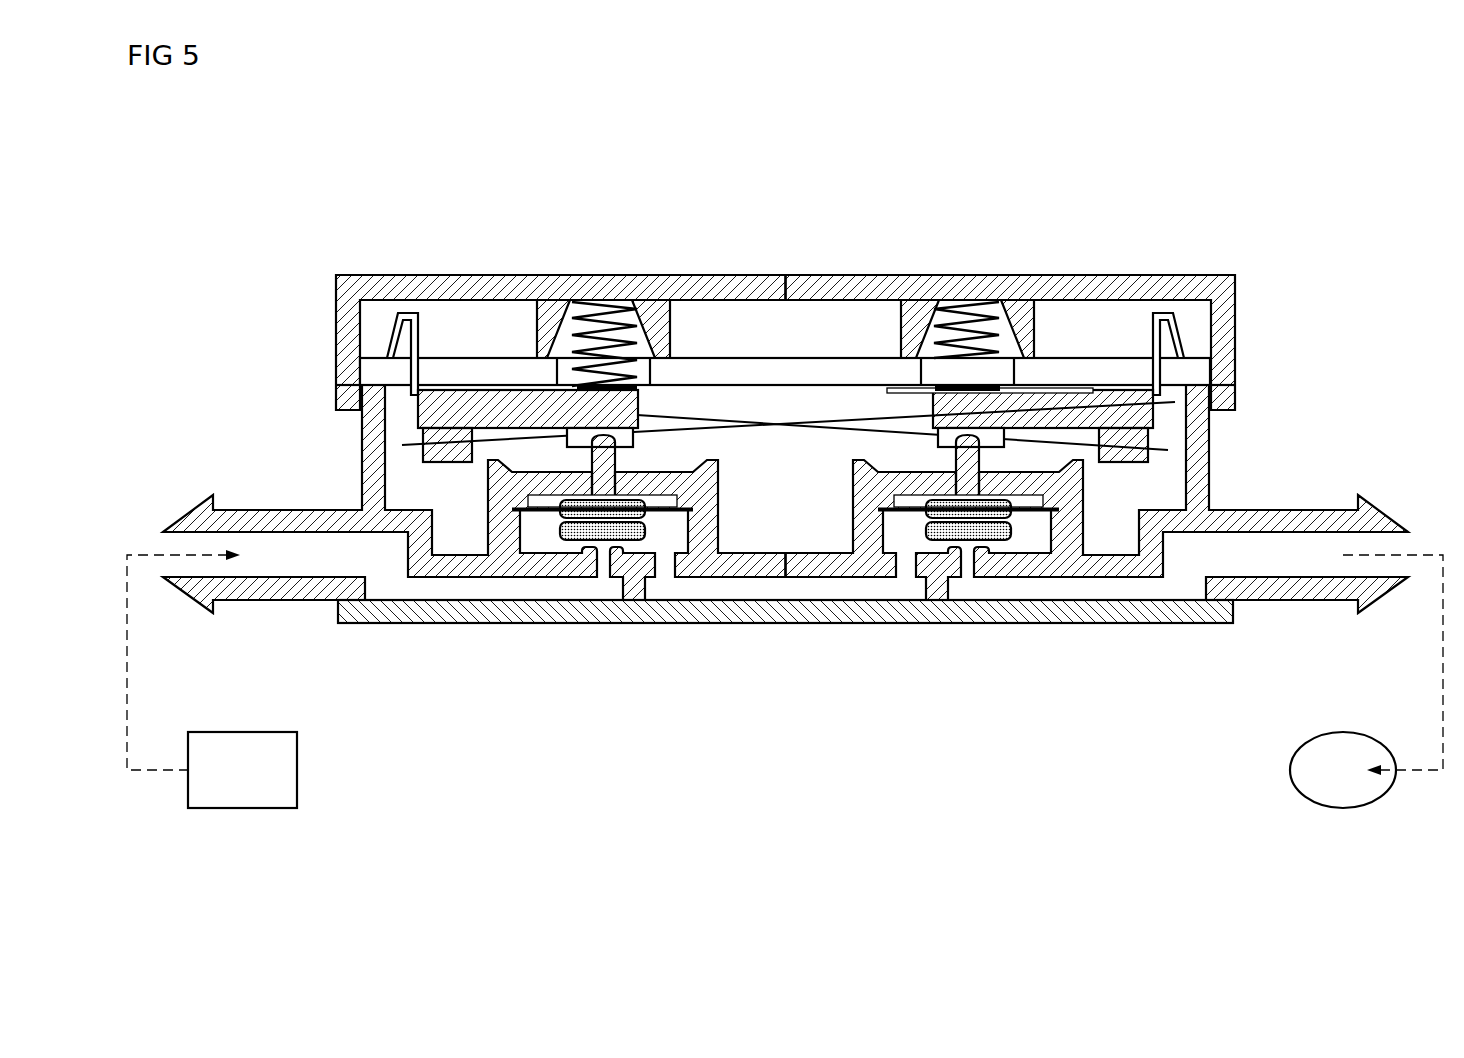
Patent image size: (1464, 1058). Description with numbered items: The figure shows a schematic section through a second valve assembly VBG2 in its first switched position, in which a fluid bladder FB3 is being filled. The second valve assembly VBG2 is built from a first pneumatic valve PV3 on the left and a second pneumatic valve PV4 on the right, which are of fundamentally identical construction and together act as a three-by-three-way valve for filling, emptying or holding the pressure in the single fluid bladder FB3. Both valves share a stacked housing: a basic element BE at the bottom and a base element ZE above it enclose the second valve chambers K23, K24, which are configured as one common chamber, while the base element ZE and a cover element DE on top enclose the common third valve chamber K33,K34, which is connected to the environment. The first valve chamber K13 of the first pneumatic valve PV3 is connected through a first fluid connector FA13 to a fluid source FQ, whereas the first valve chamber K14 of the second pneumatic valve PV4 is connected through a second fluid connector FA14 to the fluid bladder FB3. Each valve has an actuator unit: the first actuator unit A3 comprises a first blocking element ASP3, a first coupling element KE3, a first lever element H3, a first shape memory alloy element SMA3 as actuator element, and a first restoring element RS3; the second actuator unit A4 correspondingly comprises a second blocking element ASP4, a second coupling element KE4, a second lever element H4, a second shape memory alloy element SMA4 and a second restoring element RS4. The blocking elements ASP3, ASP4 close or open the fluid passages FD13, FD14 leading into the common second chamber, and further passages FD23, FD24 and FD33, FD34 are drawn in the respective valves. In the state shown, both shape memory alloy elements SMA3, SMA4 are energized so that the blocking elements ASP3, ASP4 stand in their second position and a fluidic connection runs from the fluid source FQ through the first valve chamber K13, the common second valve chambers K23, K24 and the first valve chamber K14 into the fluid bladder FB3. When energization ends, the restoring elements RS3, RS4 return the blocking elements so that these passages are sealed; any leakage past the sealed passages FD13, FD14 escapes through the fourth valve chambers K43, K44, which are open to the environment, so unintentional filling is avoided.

The cover element DE is at (1188, 298).
The base element ZE is at (797, 578).
The basic element BE is at (825, 613).
The first fluid connector FA13 is at (265, 588).
The second fluid connector FA14 is at (1298, 588).
The first lever element H3 is at (450, 410).
The second lever element H4 is at (1092, 417).
The first shape memory alloy element SMA3 is at (500, 460).
The second shape memory alloy element SMA4 is at (1087, 417).
The first restoring element RS3 is at (623, 393).
The second restoring element RS4 is at (1067, 445).
The spring seat element FD33 is at (622, 405).
The spring seat element FD34 is at (940, 445).
The third valve chambers K33,K34 is at (800, 440).
The first pneumatic valve PV3 is at (470, 170).
The second pneumatic valve PV4 is at (1100, 170).
The first coupling element KE3 is at (613, 482).
The second coupling element KE4 is at (960, 483).
The first actuator unit A3 is at (396, 470).
The second actuator unit A4 is at (1175, 470).
The second valve assembly VBG2 is at (997, 103).
The first valve chamber K13 is at (383, 566).
The first valve chamber K14 is at (1185, 572).
The second valve chamber K23 is at (785, 563).
The second valve chamber K24 is at (882, 565).
The fourth valve chamber K43 is at (703, 588).
The fourth valve chamber K44 is at (1033, 540).
The first blocking element ASP3 is at (505, 522).
The second blocking element ASP4 is at (1105, 565).
The fluid passage FD13 is at (604, 563).
The fluid passage FD14 is at (963, 563).
The fluid channel FD23 is at (673, 530).
The fluid channel FD24 is at (903, 565).
The fluid source FQ is at (297, 771).
The fluid bladder FB3 is at (1290, 771).